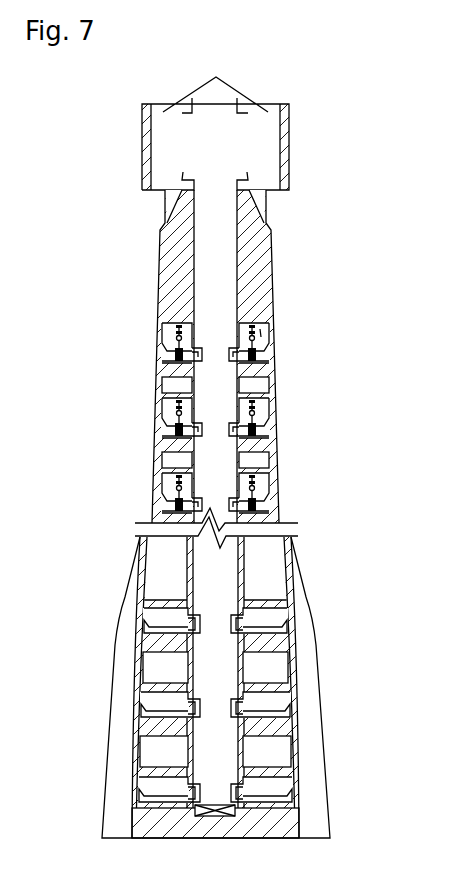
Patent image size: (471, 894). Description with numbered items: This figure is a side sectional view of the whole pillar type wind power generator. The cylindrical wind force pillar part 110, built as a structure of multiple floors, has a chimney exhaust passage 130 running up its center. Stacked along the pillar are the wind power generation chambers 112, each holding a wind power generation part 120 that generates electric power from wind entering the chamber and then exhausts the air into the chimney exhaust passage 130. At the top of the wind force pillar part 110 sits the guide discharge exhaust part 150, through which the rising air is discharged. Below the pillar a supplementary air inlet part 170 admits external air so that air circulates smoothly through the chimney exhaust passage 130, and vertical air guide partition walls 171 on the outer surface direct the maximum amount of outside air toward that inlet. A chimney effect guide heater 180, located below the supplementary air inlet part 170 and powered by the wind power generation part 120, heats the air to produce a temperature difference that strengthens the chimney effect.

The guide discharge exhaust part 150 is at (124, 105).
The wind force pillar part 110 is at (274, 278).
The wind power generation chamber 112 is at (270, 327).
The wind power generation part 120 is at (261, 344).
The chimney exhaust passage 130 is at (217, 285).
The supplementary air inlet part 170 is at (276, 619).
The air guide partition wall 171 is at (316, 657).
The chimney effect guide heater 180 is at (215, 817).